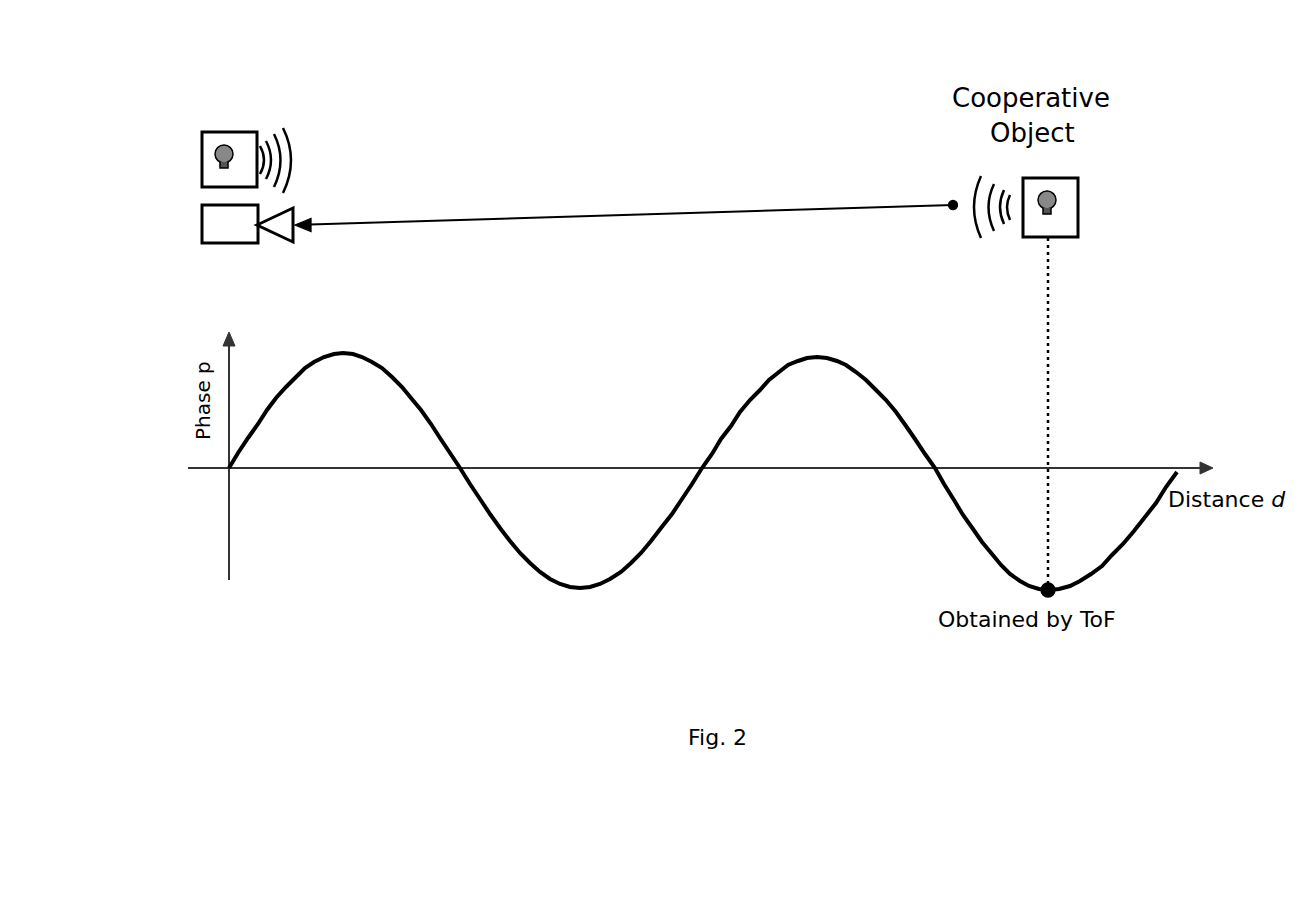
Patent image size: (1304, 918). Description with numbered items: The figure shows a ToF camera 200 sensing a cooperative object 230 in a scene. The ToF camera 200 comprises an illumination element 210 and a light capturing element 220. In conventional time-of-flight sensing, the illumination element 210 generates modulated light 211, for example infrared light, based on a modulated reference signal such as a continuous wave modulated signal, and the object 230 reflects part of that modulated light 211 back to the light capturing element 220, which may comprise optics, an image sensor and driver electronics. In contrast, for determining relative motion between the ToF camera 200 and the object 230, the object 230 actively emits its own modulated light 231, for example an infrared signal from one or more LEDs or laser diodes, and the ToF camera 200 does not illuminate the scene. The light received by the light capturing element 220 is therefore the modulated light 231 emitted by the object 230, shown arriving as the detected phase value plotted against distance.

The ToF camera 200 is at (244, 54).
The illumination element 210 is at (201, 157).
The modulated light 211 is at (288, 128).
The light capturing element 220 is at (203, 225).
The object 230 is at (1079, 191).
The modulated light 231 is at (984, 243).